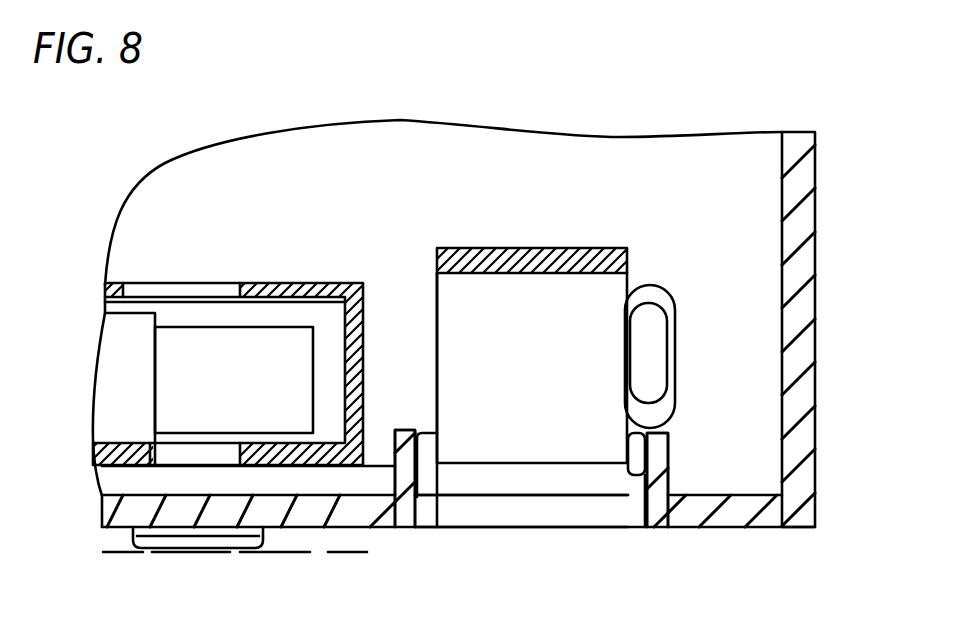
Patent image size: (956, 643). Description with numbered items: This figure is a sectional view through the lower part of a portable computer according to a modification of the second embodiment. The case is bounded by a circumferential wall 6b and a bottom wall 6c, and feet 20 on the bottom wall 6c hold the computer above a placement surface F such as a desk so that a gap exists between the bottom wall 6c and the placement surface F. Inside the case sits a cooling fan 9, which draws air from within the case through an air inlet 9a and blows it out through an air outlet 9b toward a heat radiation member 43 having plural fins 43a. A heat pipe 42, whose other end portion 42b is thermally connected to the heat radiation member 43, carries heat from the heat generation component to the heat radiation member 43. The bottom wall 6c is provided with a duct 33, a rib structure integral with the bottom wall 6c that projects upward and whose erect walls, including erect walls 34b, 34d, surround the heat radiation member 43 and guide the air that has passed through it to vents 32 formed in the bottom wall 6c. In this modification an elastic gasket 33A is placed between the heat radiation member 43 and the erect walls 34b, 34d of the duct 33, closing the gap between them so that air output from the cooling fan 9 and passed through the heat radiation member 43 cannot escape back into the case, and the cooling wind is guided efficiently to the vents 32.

The circumferential wall 6b is at (806, 147).
The bottom wall 6c is at (156, 498).
The cooling fan 9 is at (305, 281).
The air inlet 9a is at (242, 296).
The air outlet 9b is at (340, 333).
The feet 20 is at (192, 545).
The vents 32 is at (497, 515).
The duct 33 is at (682, 433).
The elastic gasket 33A is at (424, 458).
The erect wall 34b is at (668, 494).
The erect wall 34d is at (404, 428).
The heat pipe 42 is at (672, 342).
The other end portion 42b is at (650, 292).
The heat radiation member 43 is at (550, 246).
The fins 43a is at (443, 305).
The placement surface F is at (123, 551).